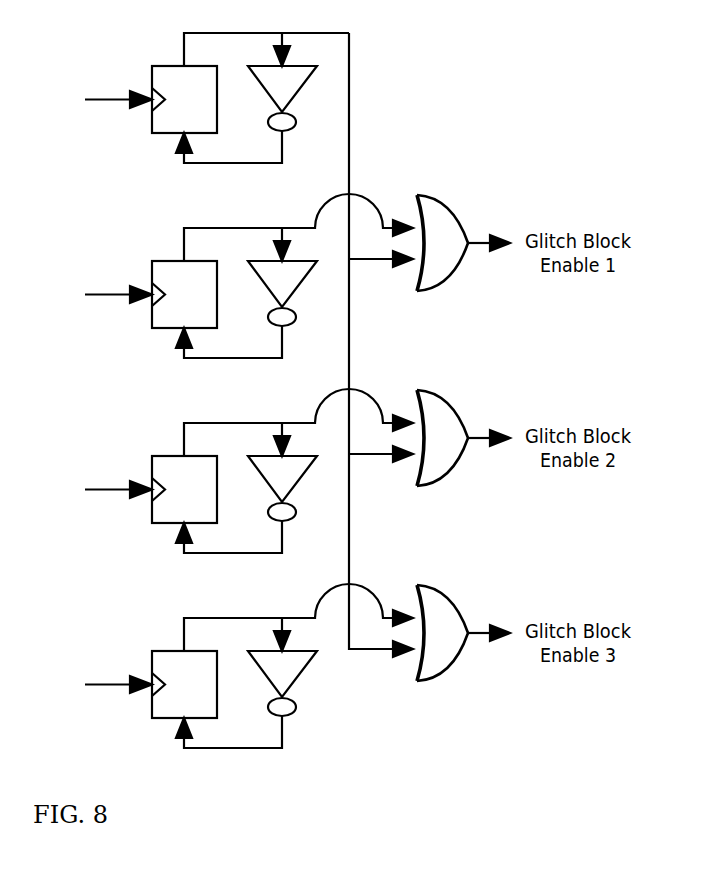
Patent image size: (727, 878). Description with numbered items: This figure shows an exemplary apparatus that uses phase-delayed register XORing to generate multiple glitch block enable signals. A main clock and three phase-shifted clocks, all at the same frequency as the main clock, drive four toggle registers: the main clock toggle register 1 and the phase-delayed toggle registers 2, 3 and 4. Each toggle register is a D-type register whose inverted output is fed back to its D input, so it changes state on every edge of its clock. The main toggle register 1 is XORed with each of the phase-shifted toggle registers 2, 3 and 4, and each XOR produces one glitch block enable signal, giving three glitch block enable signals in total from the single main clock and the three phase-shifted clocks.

The toggle1 flip-flop stage 1 is at (196, 83).
The toggle2 flip-flop stage 2 is at (248, 276).
The toggle3 flip-flop stage 3 is at (248, 471).
The toggle4 flip-flop stage 4 is at (248, 666).